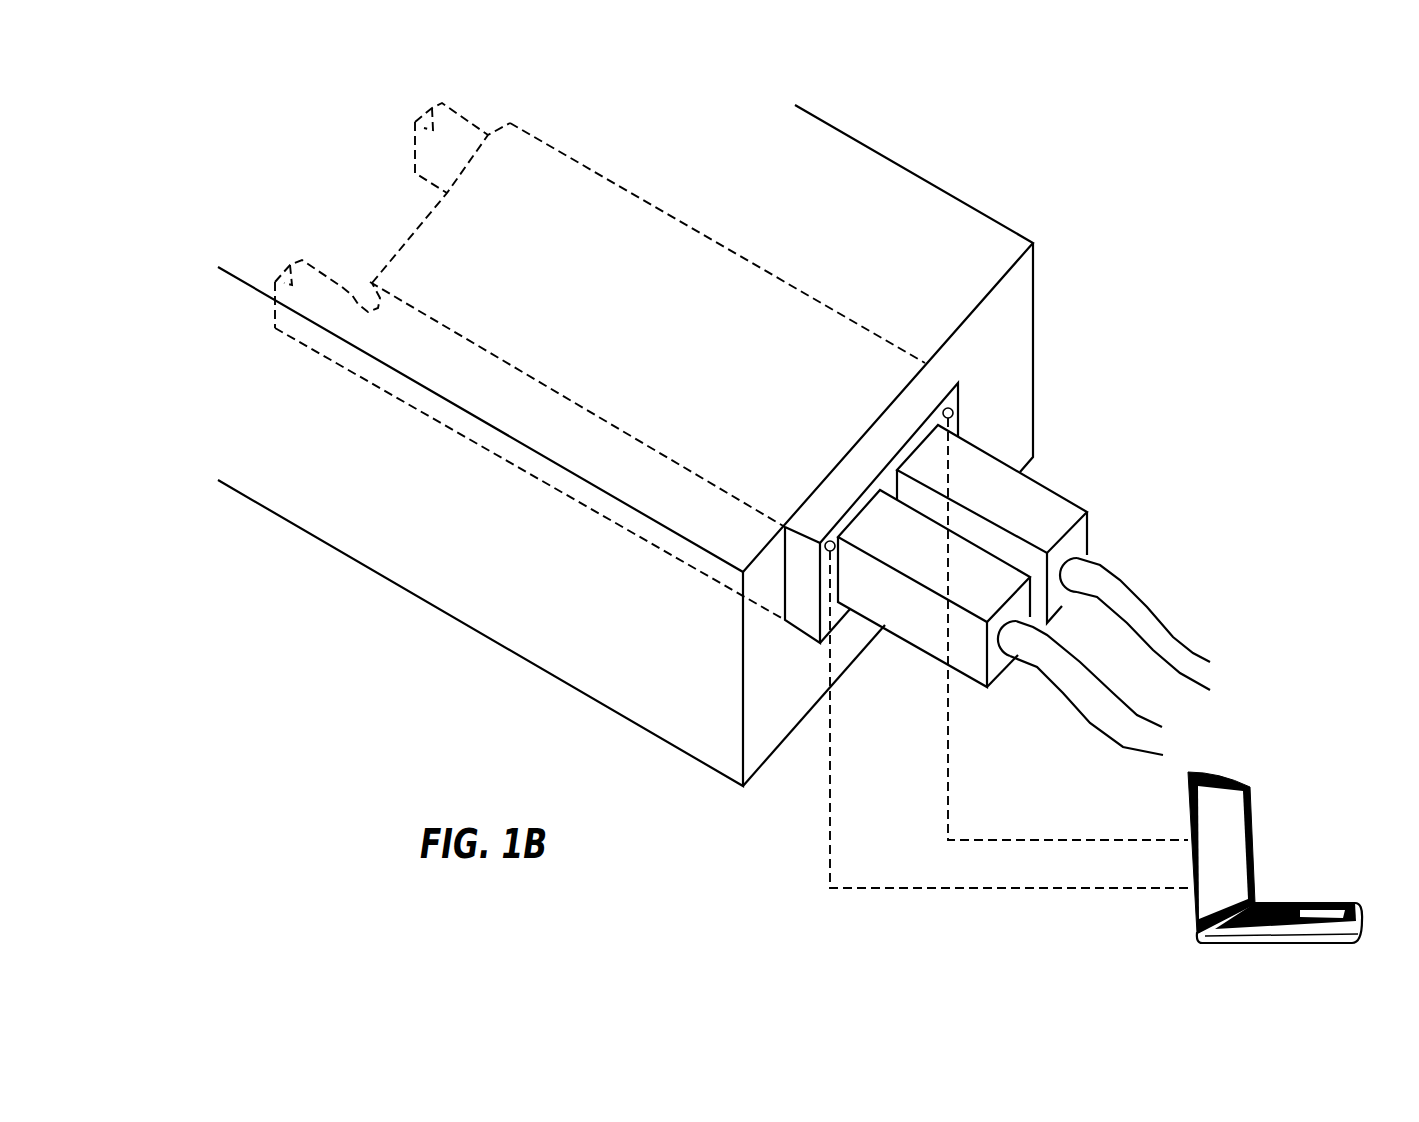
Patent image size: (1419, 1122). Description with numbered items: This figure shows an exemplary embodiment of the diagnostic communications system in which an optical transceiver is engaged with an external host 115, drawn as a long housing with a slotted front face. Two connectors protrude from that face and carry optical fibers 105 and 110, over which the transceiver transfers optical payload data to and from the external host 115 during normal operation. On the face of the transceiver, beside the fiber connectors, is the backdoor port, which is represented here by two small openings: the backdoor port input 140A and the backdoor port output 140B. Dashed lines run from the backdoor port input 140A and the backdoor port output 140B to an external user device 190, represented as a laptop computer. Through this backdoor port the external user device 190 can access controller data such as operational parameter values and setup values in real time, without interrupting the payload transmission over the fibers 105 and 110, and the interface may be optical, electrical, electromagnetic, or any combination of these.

The optical fiber 105 is at (1123, 602).
The optical fiber 110 is at (1118, 728).
The external host 115 is at (1040, 331).
The backdoor port input 140A is at (829, 541).
The backdoor port output 140B is at (947, 408).
The external user device 190 is at (970, 425).